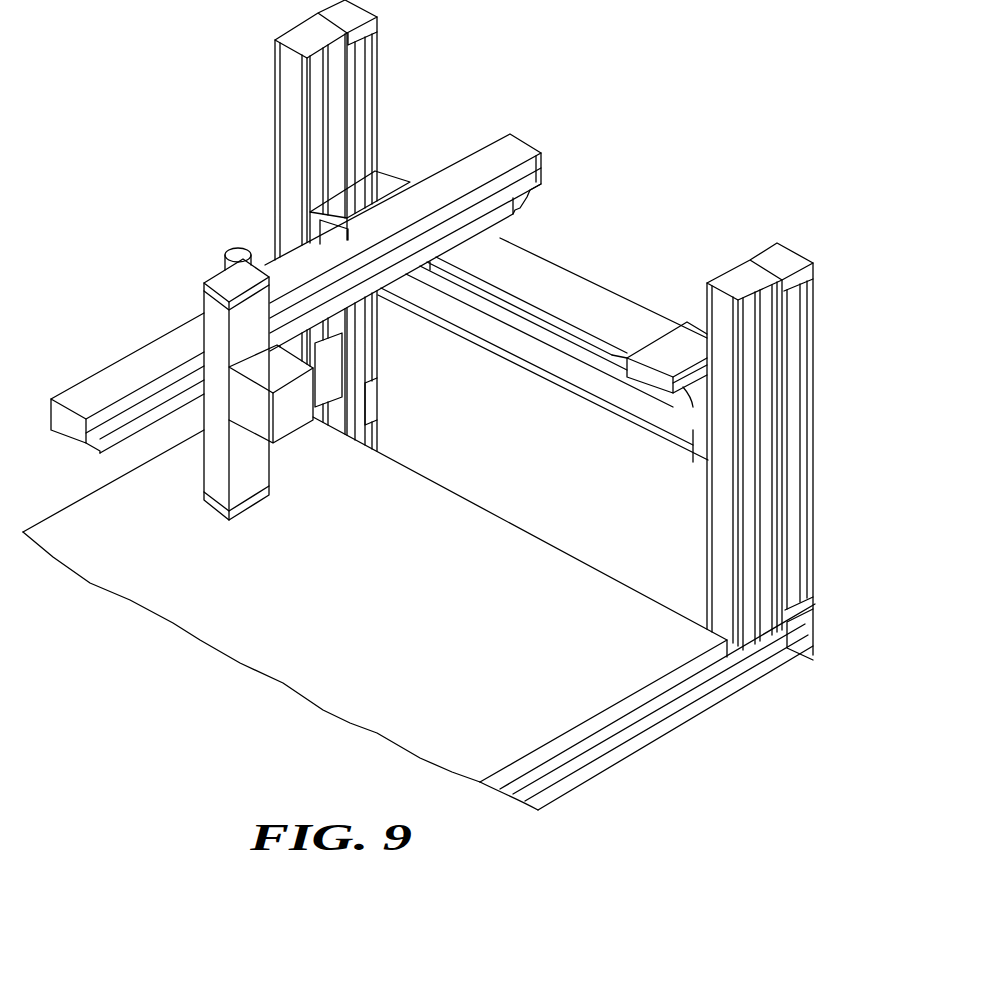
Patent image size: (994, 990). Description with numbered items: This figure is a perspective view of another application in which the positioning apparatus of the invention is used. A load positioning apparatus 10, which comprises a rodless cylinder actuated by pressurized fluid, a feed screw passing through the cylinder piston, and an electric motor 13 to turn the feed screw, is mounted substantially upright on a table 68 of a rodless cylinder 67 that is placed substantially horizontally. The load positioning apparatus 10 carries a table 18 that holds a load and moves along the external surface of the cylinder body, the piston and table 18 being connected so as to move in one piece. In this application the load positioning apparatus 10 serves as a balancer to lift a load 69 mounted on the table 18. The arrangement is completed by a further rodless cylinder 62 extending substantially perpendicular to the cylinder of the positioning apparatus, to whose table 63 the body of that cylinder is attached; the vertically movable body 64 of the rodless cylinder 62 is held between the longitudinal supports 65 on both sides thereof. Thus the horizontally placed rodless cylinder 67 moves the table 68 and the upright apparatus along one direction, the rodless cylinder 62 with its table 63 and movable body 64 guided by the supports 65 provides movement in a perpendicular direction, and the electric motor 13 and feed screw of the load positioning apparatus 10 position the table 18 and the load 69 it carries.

The load positioning apparatus 10 is at (88, 532).
The electric motor 13 is at (236, 249).
The table 18 is at (235, 393).
The rodless cylinder 62 is at (637, 303).
The table 63 is at (478, 248).
The vertically movable body 64 is at (567, 292).
The longitudinal supports 65 is at (277, 118).
The rodless cylinder 67 is at (133, 338).
The table 68 is at (200, 358).
The load 69 is at (288, 427).